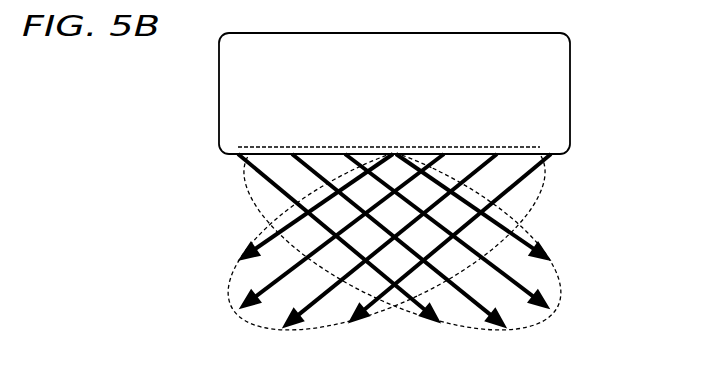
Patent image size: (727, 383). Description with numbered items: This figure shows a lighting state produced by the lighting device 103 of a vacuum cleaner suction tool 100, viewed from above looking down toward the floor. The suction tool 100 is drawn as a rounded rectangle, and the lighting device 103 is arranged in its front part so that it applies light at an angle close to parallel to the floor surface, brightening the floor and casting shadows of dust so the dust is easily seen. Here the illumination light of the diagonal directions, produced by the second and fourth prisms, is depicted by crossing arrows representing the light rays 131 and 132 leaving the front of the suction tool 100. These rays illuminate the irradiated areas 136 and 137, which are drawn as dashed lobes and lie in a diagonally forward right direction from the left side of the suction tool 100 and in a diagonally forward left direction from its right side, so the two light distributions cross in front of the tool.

The suction tool 100 is at (572, 58).
The lighting device 103 is at (517, 148).
The light rays 131 is at (590, 283).
The light rays 132 is at (272, 358).
The irradiated area 136 is at (558, 230).
The irradiated area 137 is at (318, 332).